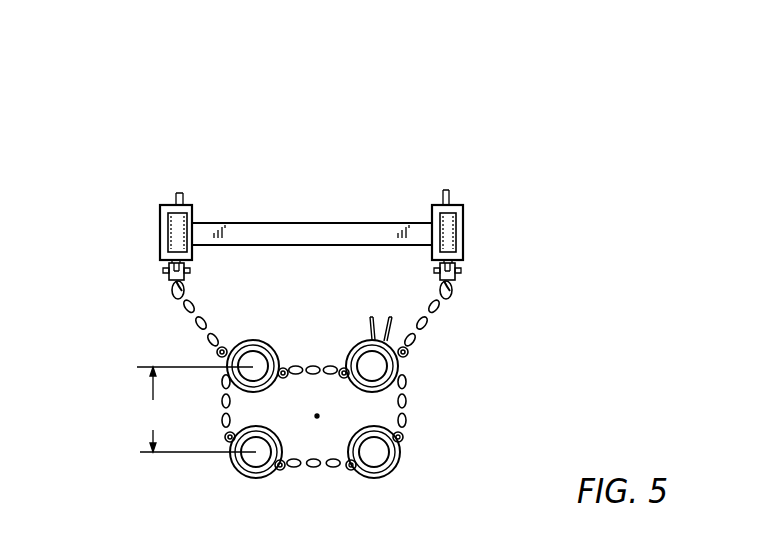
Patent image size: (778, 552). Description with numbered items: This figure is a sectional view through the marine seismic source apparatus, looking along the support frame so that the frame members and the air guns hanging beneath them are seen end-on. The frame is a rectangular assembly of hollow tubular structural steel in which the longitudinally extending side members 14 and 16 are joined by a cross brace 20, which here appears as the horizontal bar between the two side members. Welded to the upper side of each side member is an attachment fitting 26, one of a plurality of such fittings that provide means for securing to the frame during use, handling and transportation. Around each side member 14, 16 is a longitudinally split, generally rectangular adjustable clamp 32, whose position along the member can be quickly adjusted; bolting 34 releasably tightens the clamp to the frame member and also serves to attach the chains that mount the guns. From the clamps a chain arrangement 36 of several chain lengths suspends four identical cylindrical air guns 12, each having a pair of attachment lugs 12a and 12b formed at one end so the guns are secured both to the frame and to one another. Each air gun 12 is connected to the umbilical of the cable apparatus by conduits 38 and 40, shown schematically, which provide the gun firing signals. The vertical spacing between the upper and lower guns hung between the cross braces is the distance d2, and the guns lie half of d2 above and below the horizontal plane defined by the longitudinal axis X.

The air gun 12 is at (383, 462).
The attachment lug 12a is at (352, 472).
The attachment lug 12b is at (403, 437).
The side member 14 is at (466, 216).
The side member 16 is at (187, 222).
The cross brace 20 is at (336, 232).
The attachment fitting 26 is at (449, 192).
The adjustable clamp 32 is at (160, 226).
The bolting 34 is at (165, 271).
The chain arrangement 36 is at (316, 366).
The conduit 38 is at (372, 317).
The conduit 40 is at (392, 317).
The longitudinal axis X is at (317, 416).
The vertical spacing distance d2 is at (196, 409).